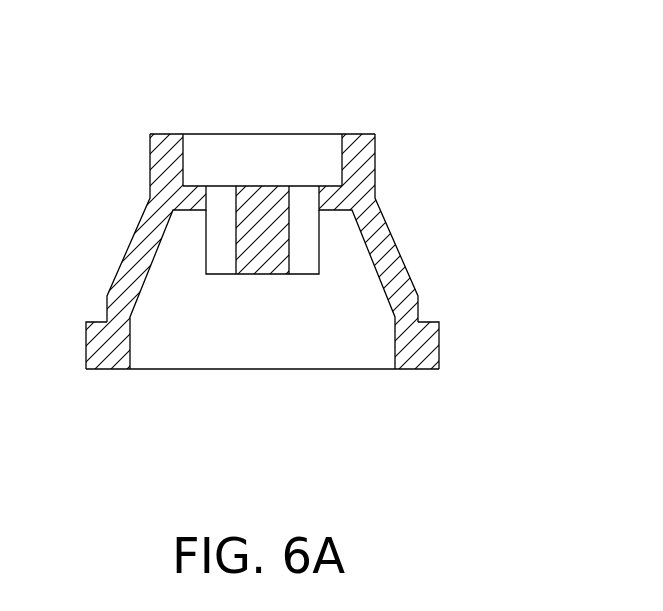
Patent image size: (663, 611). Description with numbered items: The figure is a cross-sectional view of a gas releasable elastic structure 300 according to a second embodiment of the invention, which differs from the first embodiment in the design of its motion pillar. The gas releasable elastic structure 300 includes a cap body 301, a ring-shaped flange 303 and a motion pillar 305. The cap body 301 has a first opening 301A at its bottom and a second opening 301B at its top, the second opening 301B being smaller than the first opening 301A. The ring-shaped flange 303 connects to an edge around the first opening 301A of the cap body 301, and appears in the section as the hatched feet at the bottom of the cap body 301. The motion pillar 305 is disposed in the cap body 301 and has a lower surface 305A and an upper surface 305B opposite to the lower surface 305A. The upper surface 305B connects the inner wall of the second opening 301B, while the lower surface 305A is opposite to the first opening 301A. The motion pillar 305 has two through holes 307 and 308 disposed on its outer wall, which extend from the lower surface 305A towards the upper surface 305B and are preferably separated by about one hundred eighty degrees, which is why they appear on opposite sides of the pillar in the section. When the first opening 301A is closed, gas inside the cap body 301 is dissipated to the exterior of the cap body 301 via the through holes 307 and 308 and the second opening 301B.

The gas releasable elastic structure 300 is at (331, 243).
The cap body 301 is at (363, 188).
The first opening 301A is at (288, 365).
The second opening 301B is at (230, 134).
The ring-shaped flange 303 is at (423, 337).
The motion pillar 305 is at (272, 200).
The lower surface 305A is at (245, 290).
The upper surface 305B is at (225, 178).
The through hole 307 is at (212, 278).
The through hole 308 is at (313, 277).